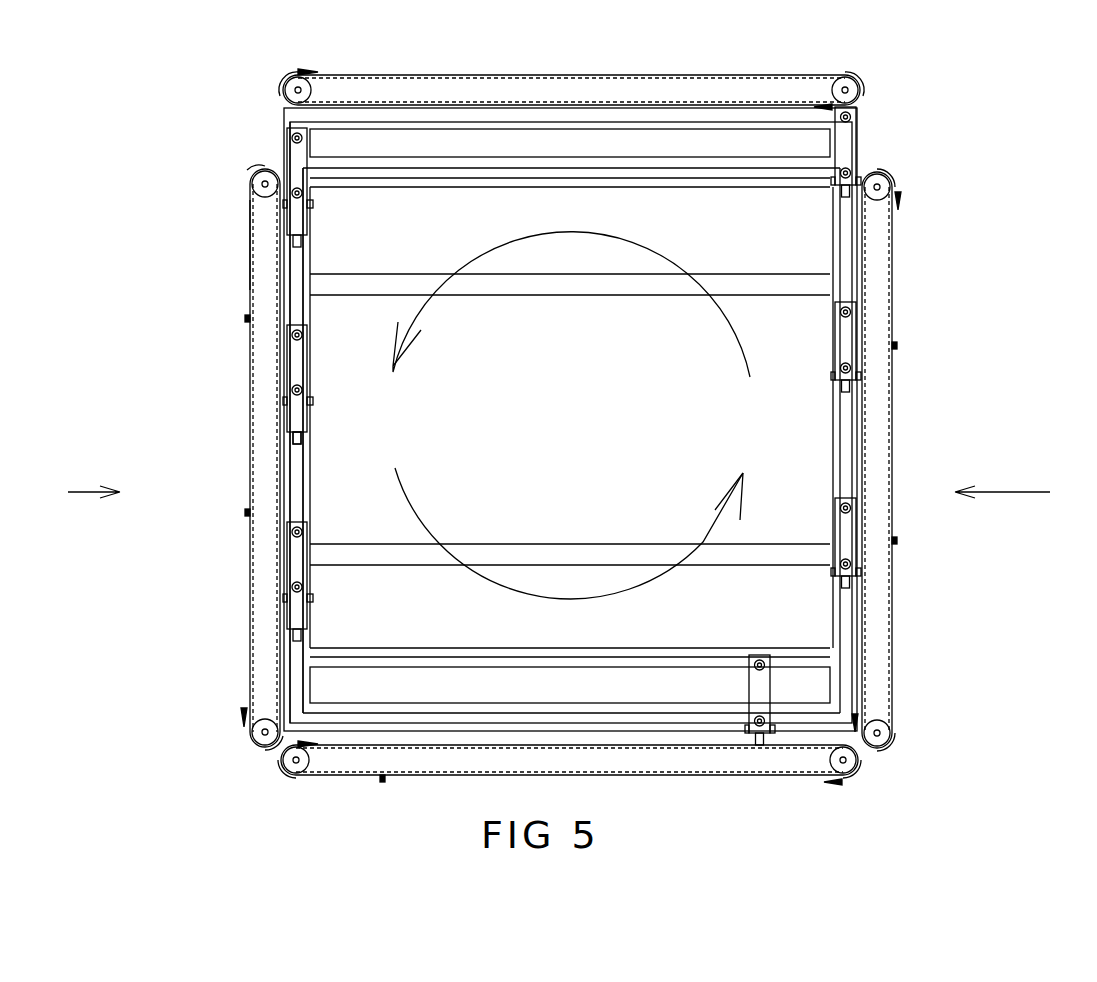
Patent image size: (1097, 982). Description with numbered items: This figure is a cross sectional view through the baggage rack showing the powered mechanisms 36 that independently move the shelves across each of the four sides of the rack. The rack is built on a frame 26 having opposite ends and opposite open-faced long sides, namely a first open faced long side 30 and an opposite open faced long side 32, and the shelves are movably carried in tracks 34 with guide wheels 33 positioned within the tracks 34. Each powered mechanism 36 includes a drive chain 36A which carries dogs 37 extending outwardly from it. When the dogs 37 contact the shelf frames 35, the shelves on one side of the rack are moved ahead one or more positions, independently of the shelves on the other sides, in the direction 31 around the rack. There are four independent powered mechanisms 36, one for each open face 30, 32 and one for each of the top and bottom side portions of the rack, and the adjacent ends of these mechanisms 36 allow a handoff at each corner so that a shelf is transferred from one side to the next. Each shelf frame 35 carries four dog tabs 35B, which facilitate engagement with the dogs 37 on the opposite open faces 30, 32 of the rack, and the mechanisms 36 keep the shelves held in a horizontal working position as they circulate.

The frame 26 is at (289, 468).
The first open faced long side 30 is at (1024, 494).
The direction 31 is at (583, 415).
The opposite open faced long side 32 is at (77, 494).
The guide wheels 33 is at (290, 192).
The tracks 34 is at (302, 664).
The shelf frame 35 is at (268, 581).
The dog tabs 35B is at (289, 624).
The powered mechanism 36 is at (595, 88).
The drive chain 36A is at (250, 240).
The dogs 37 is at (290, 423).